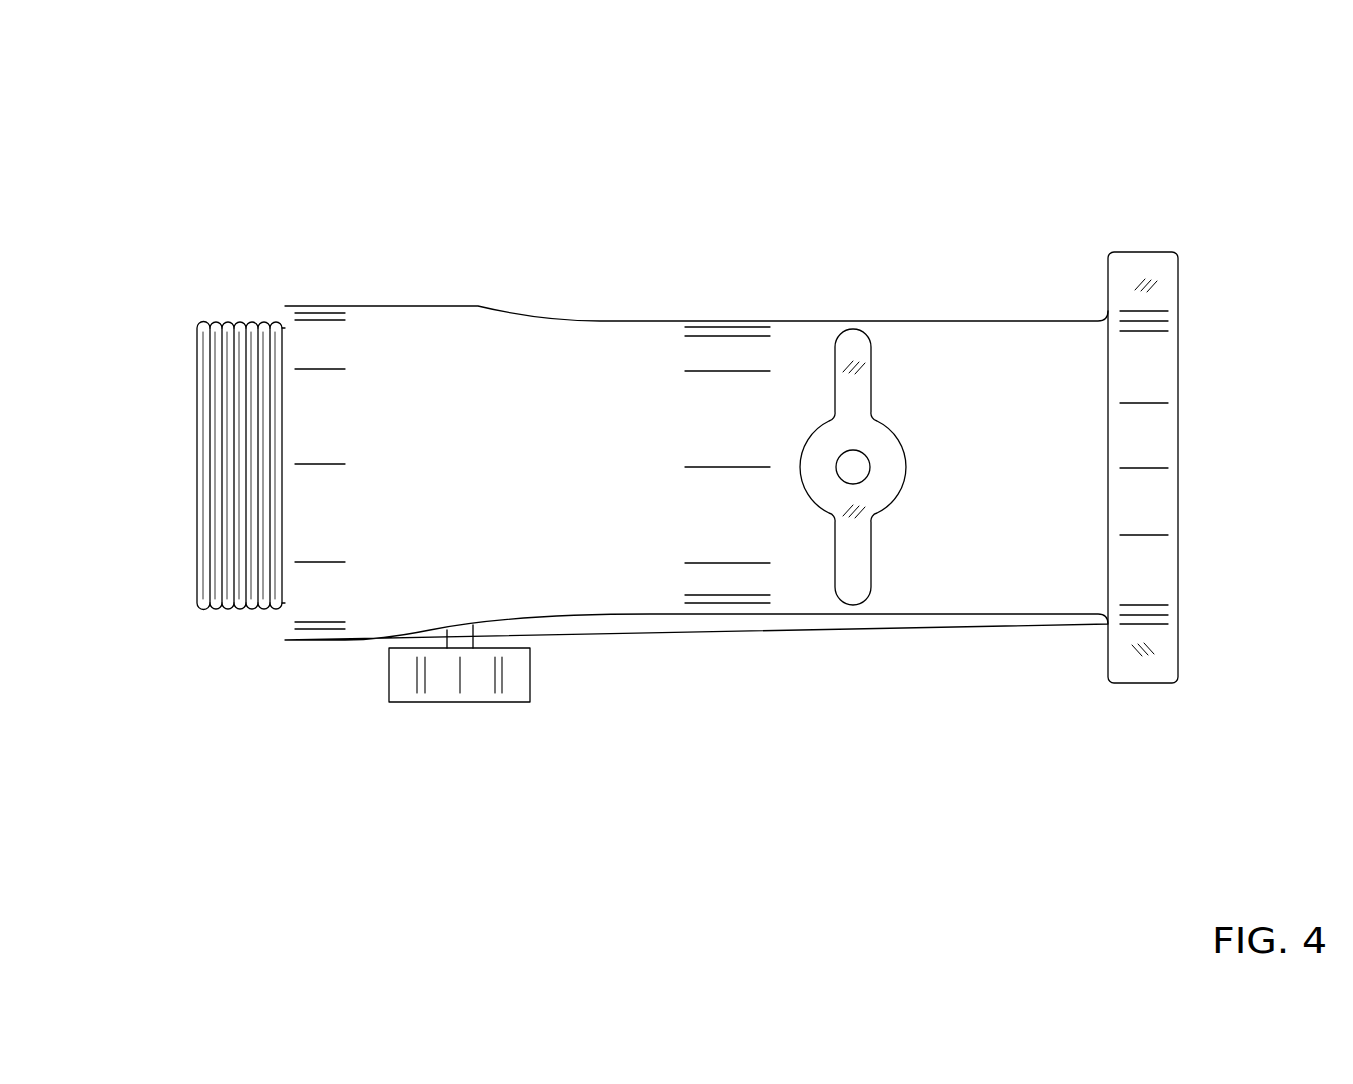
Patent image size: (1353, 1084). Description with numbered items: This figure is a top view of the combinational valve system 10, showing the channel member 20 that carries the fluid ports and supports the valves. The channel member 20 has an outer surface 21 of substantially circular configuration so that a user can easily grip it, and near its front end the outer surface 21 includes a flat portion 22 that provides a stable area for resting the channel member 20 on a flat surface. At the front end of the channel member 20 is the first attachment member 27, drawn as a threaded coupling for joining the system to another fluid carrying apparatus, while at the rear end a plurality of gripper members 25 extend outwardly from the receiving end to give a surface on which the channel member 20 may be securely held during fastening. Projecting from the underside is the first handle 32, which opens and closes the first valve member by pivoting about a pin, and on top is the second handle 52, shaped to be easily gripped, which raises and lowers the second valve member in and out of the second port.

The combinational valve system 10 is at (226, 152).
The channel member 20 is at (948, 622).
The outer surface 21 is at (557, 347).
The flat portion 22 is at (398, 305).
The gripper members 25 is at (1163, 267).
The first attachment member 27 is at (222, 605).
The first handle 32 is at (477, 703).
The second handle 52 is at (857, 345).